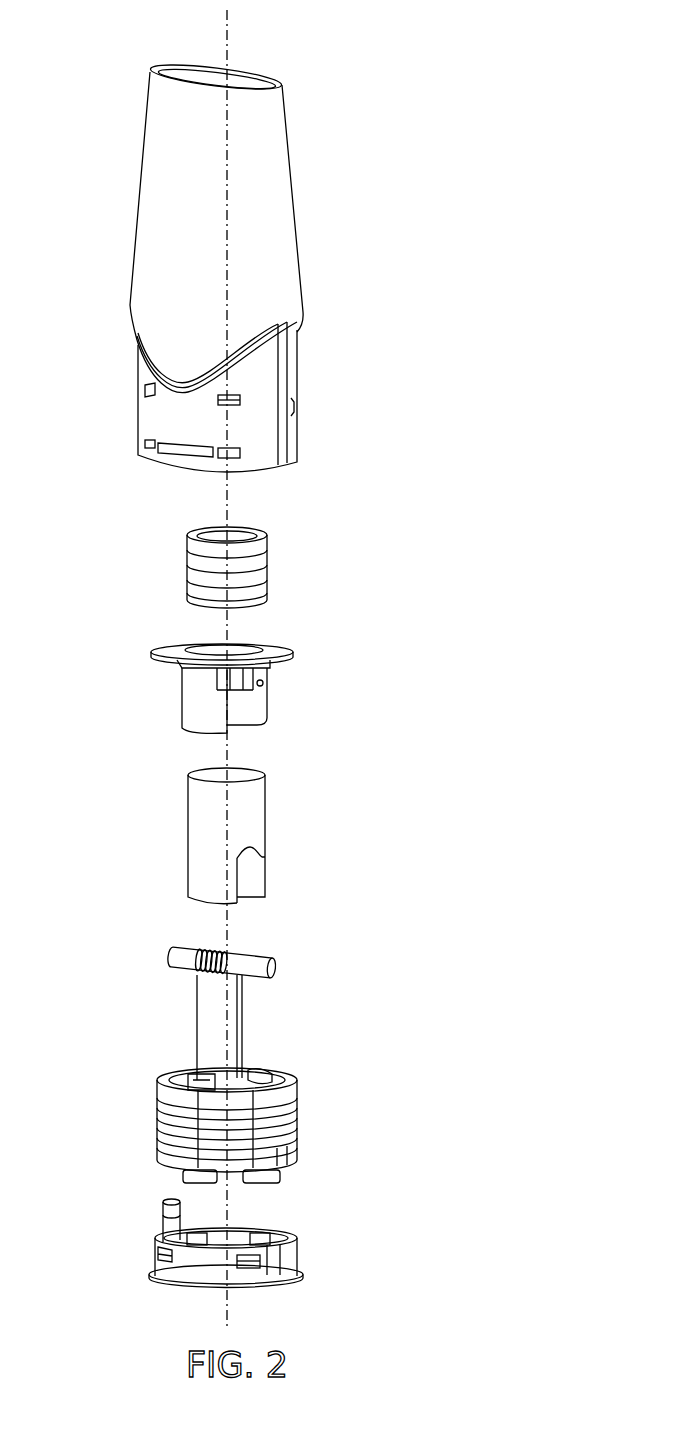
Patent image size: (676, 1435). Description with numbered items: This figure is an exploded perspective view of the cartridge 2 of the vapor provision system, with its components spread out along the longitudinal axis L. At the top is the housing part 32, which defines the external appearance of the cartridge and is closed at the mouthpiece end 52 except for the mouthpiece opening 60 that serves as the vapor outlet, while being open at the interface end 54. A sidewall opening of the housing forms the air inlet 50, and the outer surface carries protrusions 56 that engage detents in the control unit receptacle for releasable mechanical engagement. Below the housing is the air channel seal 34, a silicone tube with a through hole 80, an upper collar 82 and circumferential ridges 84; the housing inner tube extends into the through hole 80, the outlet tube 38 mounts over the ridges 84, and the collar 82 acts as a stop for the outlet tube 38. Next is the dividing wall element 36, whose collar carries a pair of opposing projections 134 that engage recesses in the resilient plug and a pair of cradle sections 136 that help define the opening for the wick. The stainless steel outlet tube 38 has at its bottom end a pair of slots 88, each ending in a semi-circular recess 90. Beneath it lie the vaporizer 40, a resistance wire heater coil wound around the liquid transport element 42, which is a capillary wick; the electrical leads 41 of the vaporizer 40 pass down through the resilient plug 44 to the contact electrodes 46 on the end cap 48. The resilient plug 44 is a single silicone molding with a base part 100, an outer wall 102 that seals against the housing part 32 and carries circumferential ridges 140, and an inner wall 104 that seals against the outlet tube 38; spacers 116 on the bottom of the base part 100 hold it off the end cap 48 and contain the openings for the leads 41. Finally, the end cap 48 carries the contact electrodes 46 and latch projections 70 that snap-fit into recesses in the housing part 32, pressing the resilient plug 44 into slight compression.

The cartridge 2 is at (492, 393).
The longitudinal axis L is at (232, 40).
The housing part 32 is at (122, 297).
The air channel seal 34 is at (172, 552).
The dividing wall element 36 is at (140, 640).
The outlet tube 38 is at (178, 800).
The vaporizer 40 is at (212, 950).
The electrical leads 41 is at (197, 1012).
The liquid transport element 42 is at (170, 955).
The resilient plug 44 is at (140, 1090).
The contact electrodes 46 is at (237, 1230).
The end cap 48 is at (140, 1268).
The air inlet 50 is at (296, 400).
The mouthpiece end 52 is at (258, 72).
The interface end 54 is at (285, 1285).
The protrusions 56 is at (218, 400).
The mouthpiece opening 60 is at (215, 66).
The latch projections 70 is at (225, 1272).
The through hole 80 is at (236, 530).
The upper collar 82 is at (268, 538).
The circumferential ridges 84 is at (265, 585).
The slots 88 is at (268, 888).
The semi-circular recess 90 is at (256, 850).
The base part 100 is at (290, 1160).
The outer wall 102 is at (270, 1078).
The inner wall 104 is at (193, 1082).
The spacers 116 is at (278, 1186).
The projections/tongues 134 is at (190, 710).
The cradle sections 136 is at (262, 685).
The circumferential ridges 140 is at (290, 1122).